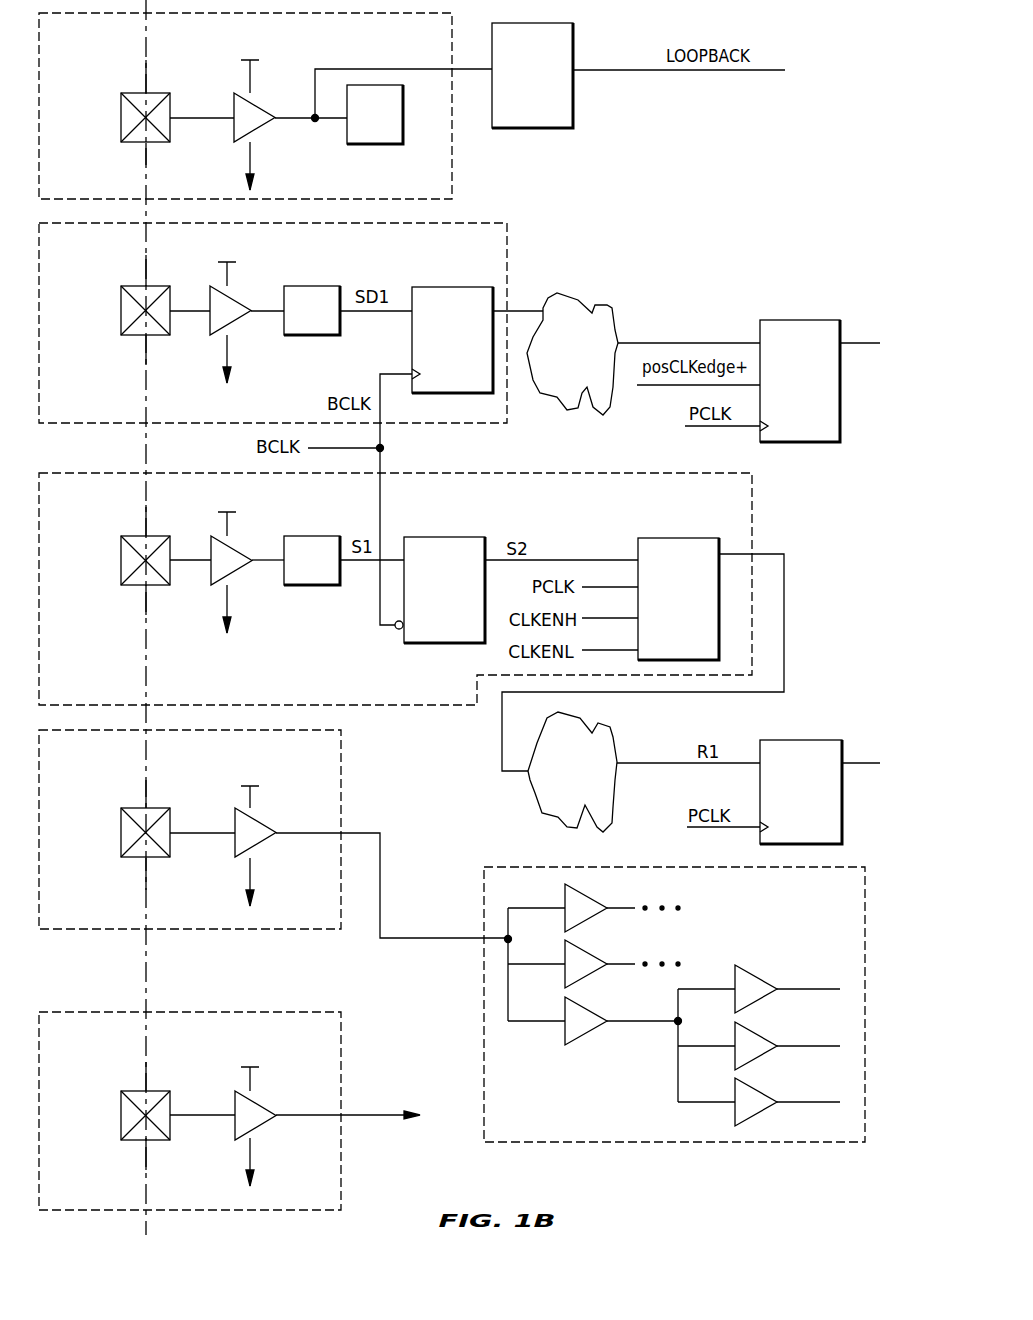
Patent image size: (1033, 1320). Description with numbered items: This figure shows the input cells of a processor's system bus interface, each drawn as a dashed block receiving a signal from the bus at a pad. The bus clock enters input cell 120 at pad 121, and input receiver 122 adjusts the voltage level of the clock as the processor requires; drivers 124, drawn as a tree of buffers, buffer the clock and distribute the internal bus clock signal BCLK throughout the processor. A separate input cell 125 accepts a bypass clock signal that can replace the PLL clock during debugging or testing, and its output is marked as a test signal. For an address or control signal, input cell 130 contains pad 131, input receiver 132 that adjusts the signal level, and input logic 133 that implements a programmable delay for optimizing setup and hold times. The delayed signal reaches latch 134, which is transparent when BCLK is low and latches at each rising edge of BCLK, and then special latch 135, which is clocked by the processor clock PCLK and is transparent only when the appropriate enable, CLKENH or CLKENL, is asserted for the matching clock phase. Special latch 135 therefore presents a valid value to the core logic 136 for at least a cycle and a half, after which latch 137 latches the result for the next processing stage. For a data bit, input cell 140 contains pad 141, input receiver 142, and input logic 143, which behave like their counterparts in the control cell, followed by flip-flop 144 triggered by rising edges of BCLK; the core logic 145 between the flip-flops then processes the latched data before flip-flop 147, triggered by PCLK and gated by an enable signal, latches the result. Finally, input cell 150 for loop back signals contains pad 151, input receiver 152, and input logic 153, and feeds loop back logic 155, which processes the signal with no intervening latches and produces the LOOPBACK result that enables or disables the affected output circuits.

The input cell 150 is at (452, 181).
The pad 151 is at (135, 143).
The input receiver 152 is at (263, 125).
The input logic 153 is at (393, 144).
The loop back logic 155 is at (573, 107).
The input cell 140 is at (507, 248).
The pad 141 is at (155, 335).
The input receiver 142 is at (239, 316).
The input logic 143 is at (299, 286).
The flip-flop 144 is at (441, 287).
The data path logic 145 is at (605, 303).
The flip-flop 147 is at (813, 320).
The input cell 130 is at (752, 500).
The pad 131 is at (121, 551).
The input receiver 132 is at (239, 566).
The input logic 133 is at (299, 536).
The latch 134 is at (441, 537).
The special latch 135 is at (677, 538).
The logic 136 is at (613, 742).
The latch 137 is at (815, 740).
The input cell 120 is at (341, 768).
The pad 121 is at (135, 858).
The input receiver 122 is at (265, 842).
The drivers 124 is at (817, 1145).
The input cell 125 is at (341, 1038).